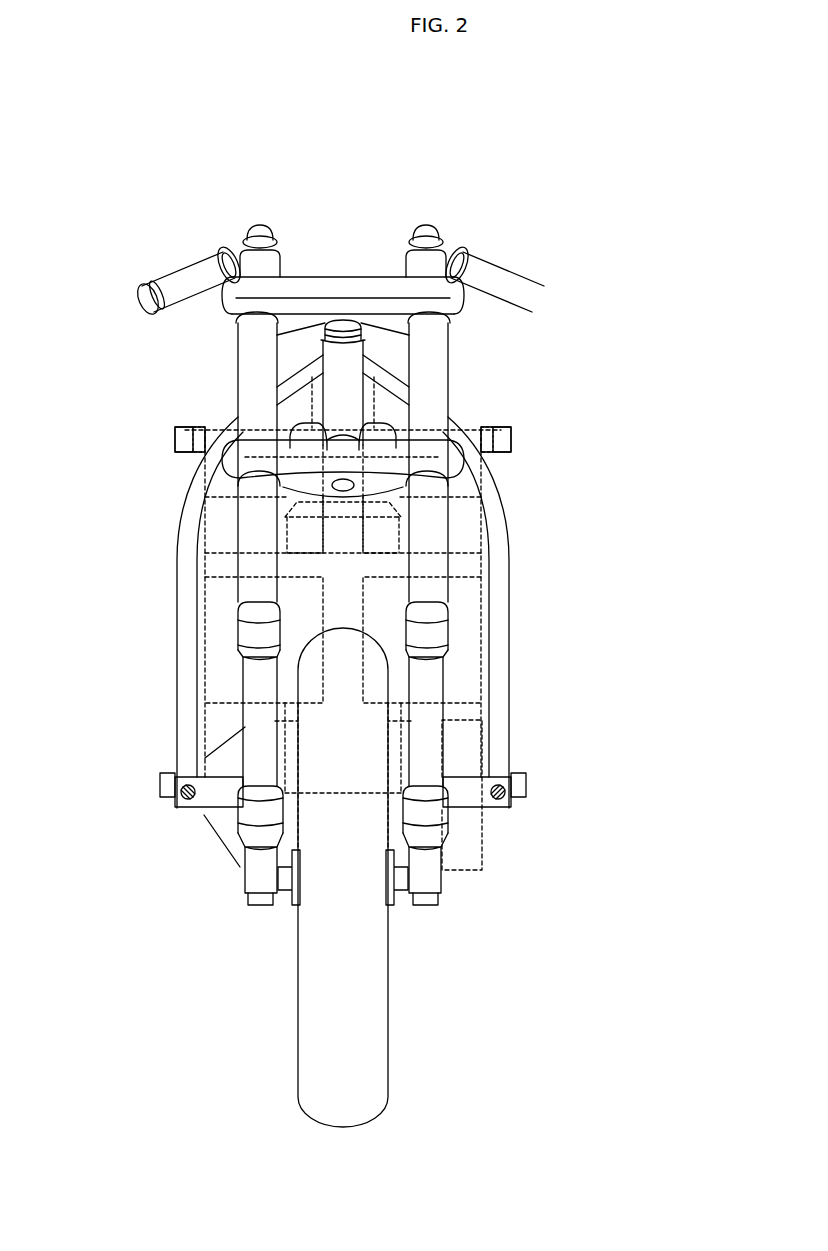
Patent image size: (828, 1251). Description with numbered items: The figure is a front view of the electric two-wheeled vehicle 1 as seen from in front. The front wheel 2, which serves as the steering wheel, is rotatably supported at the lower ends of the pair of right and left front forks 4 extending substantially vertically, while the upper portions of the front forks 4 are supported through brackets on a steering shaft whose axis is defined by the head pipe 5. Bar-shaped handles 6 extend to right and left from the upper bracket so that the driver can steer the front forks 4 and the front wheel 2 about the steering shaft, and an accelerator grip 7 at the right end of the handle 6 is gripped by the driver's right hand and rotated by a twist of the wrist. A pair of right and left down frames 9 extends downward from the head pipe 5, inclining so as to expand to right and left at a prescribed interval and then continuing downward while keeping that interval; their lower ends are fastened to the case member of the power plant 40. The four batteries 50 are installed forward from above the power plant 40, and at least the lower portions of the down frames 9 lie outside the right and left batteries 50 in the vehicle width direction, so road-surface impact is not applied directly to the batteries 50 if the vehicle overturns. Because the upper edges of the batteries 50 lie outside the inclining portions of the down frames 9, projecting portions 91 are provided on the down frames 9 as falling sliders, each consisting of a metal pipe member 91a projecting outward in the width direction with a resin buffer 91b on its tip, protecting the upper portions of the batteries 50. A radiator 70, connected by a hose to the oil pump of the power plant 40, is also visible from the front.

The electric two-wheeled vehicle 1 is at (583, 232).
The front wheel 2 is at (377, 1014).
The front forks 4 is at (250, 591).
The head pipe 5 is at (340, 352).
The handles 6 is at (221, 276).
The accelerator grip 7 is at (158, 282).
The down frames 9 is at (180, 497).
The power plant 40 is at (222, 840).
The batteries 50 is at (217, 425).
The radiator 70 is at (393, 536).
The projecting portions 91 is at (185, 426).
The metal pipe members 91a is at (200, 427).
The resin buffers 91b is at (175, 439).